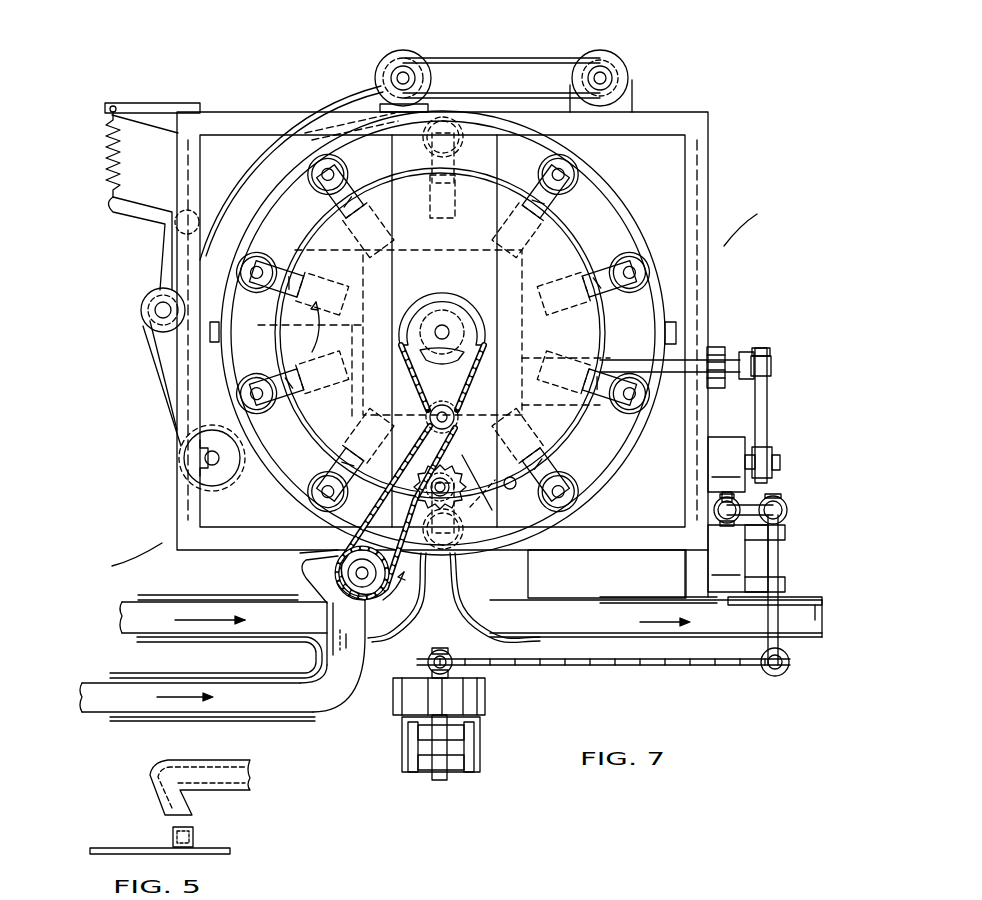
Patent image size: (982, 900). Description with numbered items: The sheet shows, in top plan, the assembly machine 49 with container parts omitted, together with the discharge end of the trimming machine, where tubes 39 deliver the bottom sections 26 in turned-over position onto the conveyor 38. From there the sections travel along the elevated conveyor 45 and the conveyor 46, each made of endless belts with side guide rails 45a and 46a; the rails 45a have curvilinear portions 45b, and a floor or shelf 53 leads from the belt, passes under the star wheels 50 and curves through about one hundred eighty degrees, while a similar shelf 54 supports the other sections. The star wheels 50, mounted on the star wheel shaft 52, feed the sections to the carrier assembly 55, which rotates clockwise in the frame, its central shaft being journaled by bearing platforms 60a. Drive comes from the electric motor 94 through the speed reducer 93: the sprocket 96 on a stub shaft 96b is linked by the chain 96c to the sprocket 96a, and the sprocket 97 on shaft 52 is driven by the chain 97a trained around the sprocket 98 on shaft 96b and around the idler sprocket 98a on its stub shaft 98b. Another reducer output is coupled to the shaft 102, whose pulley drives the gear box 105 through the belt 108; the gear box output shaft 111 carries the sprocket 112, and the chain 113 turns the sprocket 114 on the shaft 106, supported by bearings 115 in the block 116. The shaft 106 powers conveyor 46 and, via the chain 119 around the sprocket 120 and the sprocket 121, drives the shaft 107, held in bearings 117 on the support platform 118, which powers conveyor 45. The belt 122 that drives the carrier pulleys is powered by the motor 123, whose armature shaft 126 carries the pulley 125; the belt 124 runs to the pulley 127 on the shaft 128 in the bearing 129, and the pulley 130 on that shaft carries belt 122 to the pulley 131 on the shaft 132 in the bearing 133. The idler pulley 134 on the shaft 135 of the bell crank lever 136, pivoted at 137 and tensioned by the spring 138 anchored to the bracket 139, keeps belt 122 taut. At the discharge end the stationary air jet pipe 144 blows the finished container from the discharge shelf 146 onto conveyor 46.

In FIG. 7, the assembly machine 49 is at (728, 116).
In FIG. 7, the bracket 139 is at (155, 118).
In FIG. 7, the spring 138 is at (108, 168).
In FIG. 7, the bell crank lever 136 is at (132, 220).
In FIG. 7, the pivot 137 is at (195, 212).
In FIG. 7, the floor portion or shelf 53 is at (300, 168).
In FIG. 7, the pulley 130 is at (390, 52).
In FIG. 7, the shaft 128 is at (403, 58).
In FIG. 7, the pulley 127 is at (420, 80).
In FIG. 7, the belt 124 is at (538, 58).
In FIG. 7, the bearing 129 is at (438, 80).
In FIG. 7, the armature shaft 126 is at (594, 52).
In FIG. 7, the pulley 125 is at (603, 62).
In FIG. 7, the motor 123 is at (625, 70).
In FIG. 7, the electric motor 94 is at (302, 428).
In FIG. 7, the carrier assembly 55 is at (575, 230).
In FIG. 7, the speed reducer 93 is at (528, 278).
In FIG. 7, the bearing platforms 60a is at (498, 170).
In FIG. 7, the belt 122 is at (296, 252).
In FIG. 7, the bearing 133 is at (232, 425).
In FIG. 7, the stationary air jet pipe 144 is at (548, 475).
In FIG. 7, the stub shaft 96b is at (490, 336).
In FIG. 7, the stub shaft 98b is at (500, 402).
In FIG. 7, the shaft 102 is at (738, 352).
In FIG. 7, the belt 108 is at (768, 410).
In FIG. 7, the sprocket 112 is at (772, 448).
In FIG. 7, the gear box output shaft 111 is at (780, 460).
In FIG. 7, the gear box 105 is at (731, 469).
In FIG. 7, the chain 113 is at (745, 505).
In FIG. 7, the sprocket 114 is at (785, 510).
In FIG. 7, the shaft 106 is at (780, 568).
In FIG. 7, the block 116 is at (711, 572).
In FIG. 7, the bearings 115 is at (785, 585).
In FIG. 7, the sprocket 96 is at (445, 300).
In FIG. 7, the chain 96c is at (452, 300).
In FIG. 7, the sprocket 97 is at (370, 592).
In FIG. 7, the star wheel shaft 52 is at (312, 568).
In FIG. 7, the idler sprocket 98a is at (425, 412).
In FIG. 7, the chain 97a is at (405, 440).
In FIG. 7, the sprocket 98 is at (455, 475).
In FIG. 7, the sprocket 96a is at (505, 490).
In FIG. 7, the shaft 135 is at (140, 312).
In FIG. 7, the idler pulley 134 is at (152, 348).
In FIG. 7, the pulley 131 is at (182, 466).
In FIG. 7, the shaft 132 is at (228, 472).
In FIG. 7, the conveyor 46 is at (160, 610).
In FIG. 7, the side guide rail 46a is at (228, 596).
In FIG. 7, the discharge shelf 146 is at (528, 570).
In FIG. 7, the floor or shelf portion 54 is at (325, 614).
In FIG. 7, the star wheels 50 is at (338, 598).
In FIG. 7, the curvilinear portions 45b is at (312, 660).
In FIG. 7, the conveyor 45 is at (312, 712).
In FIG. 7, the side guide rails 45a is at (122, 720).
In FIG. 7, the sprocket 121 is at (462, 658).
In FIG. 7, the sprocket 120 is at (773, 678).
In FIG. 7, the chain 119 is at (700, 668).
In FIG. 7, the support platform 118 is at (470, 742).
In FIG. 7, the bearings 117 is at (418, 775).
In FIG. 7, the shaft 107 is at (440, 782).
In FIG. 5, the tubes 39 is at (212, 768).
In FIG. 5, the bottom sections 26 is at (195, 835).
In FIG. 5, the conveyor 38 is at (228, 848).